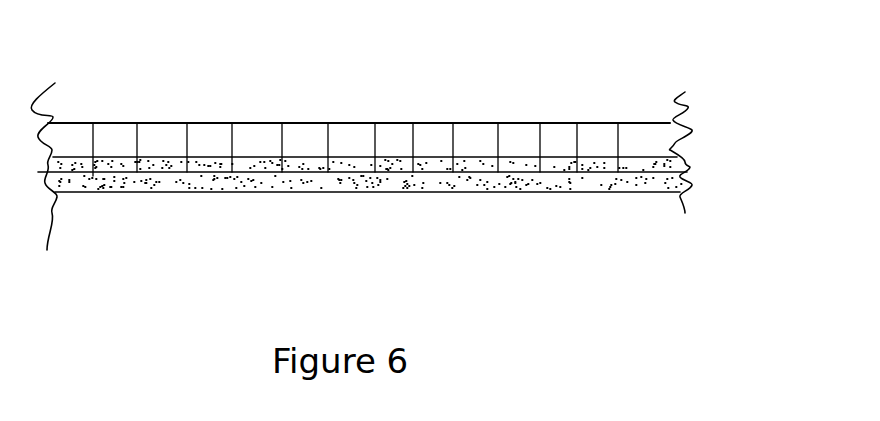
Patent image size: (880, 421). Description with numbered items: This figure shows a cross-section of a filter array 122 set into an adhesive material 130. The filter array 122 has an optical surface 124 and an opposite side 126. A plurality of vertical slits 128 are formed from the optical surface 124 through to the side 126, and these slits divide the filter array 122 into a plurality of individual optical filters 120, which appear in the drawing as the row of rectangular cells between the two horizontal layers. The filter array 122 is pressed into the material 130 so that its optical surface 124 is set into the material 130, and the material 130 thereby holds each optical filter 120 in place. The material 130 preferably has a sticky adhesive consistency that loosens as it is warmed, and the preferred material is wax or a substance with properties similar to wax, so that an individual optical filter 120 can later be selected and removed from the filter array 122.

The optical filter 120 is at (210, 137).
The filter array 122 is at (650, 114).
The optical surface 124 is at (645, 172).
The side 126 is at (433, 122).
The vertical slits 128 is at (373, 138).
The material 130 is at (492, 177).